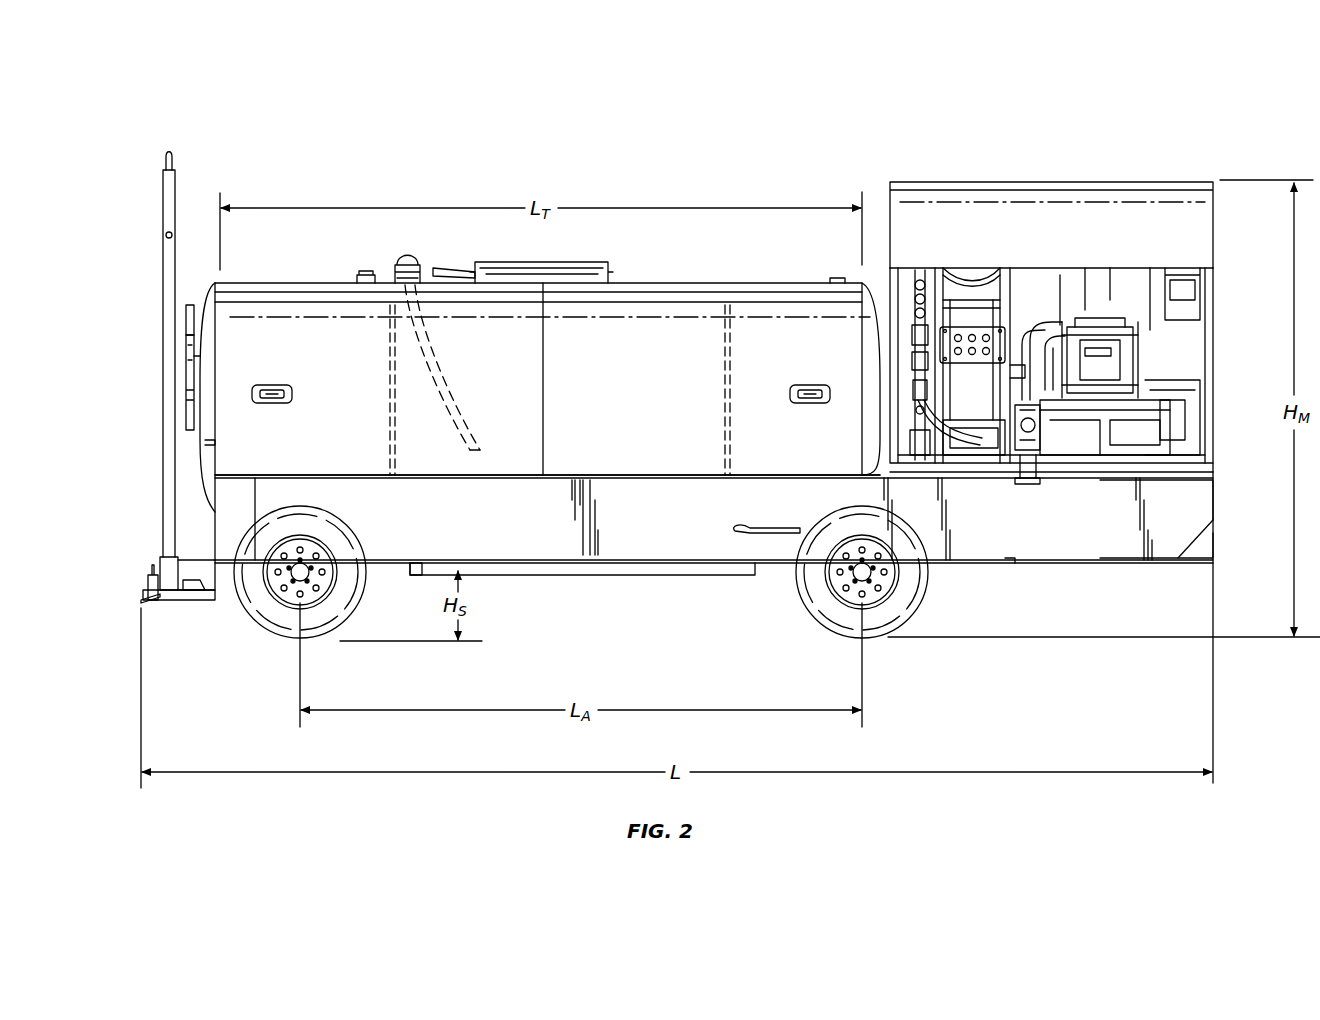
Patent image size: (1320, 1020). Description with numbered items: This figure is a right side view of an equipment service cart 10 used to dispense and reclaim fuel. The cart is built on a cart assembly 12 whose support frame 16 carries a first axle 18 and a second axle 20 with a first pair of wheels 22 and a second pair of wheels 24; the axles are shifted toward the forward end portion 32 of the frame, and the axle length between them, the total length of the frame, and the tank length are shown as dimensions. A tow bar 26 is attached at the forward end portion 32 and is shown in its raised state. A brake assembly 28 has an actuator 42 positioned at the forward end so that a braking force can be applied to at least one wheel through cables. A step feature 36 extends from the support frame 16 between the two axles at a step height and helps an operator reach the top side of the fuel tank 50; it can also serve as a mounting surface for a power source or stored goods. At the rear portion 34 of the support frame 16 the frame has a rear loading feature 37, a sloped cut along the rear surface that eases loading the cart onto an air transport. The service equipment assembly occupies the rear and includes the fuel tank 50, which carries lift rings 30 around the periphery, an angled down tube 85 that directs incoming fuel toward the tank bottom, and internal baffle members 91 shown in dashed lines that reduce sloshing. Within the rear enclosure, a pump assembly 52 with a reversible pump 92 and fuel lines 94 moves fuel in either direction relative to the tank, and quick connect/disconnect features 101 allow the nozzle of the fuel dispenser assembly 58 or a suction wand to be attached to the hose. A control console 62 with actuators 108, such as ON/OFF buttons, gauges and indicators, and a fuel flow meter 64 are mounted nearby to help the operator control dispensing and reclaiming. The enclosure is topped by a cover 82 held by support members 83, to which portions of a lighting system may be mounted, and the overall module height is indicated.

The equipment service cart 10 is at (1105, 118).
The cart assembly 12 is at (1012, 565).
The support frame 16 is at (1125, 545).
The first axle 18 is at (298, 562).
The second axle 20 is at (866, 562).
The first pair of wheels 22 is at (270, 622).
The second pair of wheels 24 is at (815, 607).
The tow bar 26 is at (163, 290).
The brake assembly 28 is at (190, 300).
The lift rings 30 is at (272, 385).
The forward end portion 32 is at (305, 478).
The rear portion 34 is at (1200, 496).
The step feature 36 is at (605, 580).
The rear loading feature 37 is at (1195, 565).
The actuator 42 is at (188, 356).
The fuel tank 50 is at (680, 280).
The pump assembly 52 is at (1028, 465).
The fuel dispenser assembly 58 is at (912, 265).
The control console 62 is at (968, 335).
The fuel flow meter 64 is at (1108, 327).
The cover 82 is at (1200, 228).
The support members 83 is at (1213, 358).
The down tube 85 is at (440, 368).
The baffle member 91 is at (395, 347).
The pump 92 is at (1030, 480).
The fuel lines 94 is at (1030, 370).
The quick connect/disconnect features 101 is at (925, 372).
The actuators 108 is at (960, 320).